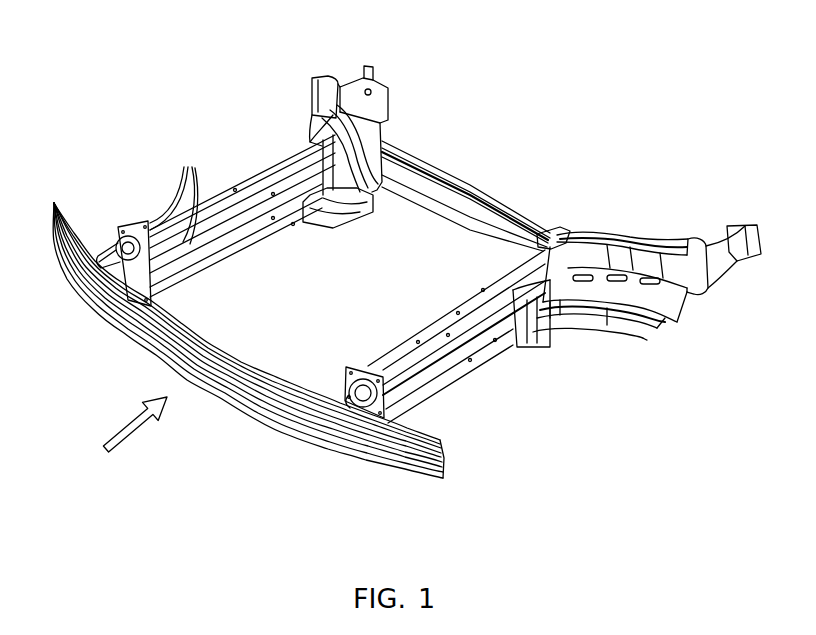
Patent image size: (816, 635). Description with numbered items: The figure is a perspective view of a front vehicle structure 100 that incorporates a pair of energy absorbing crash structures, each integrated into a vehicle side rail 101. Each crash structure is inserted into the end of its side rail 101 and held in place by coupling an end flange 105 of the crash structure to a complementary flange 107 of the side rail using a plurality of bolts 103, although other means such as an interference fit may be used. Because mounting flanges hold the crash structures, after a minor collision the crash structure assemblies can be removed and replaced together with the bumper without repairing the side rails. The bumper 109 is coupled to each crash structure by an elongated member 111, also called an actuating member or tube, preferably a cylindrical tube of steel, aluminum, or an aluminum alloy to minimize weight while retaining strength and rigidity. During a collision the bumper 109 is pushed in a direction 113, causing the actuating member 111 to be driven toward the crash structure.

The front vehicle structure 100 is at (565, 77).
The vehicle side rail 101 is at (250, 252).
The bolts 103 is at (190, 170).
The end flange 105 is at (124, 243).
The complementary flange 107 is at (152, 297).
The bumper 109 is at (195, 351).
The elongated member 111 is at (117, 260).
The direction 113 is at (125, 435).